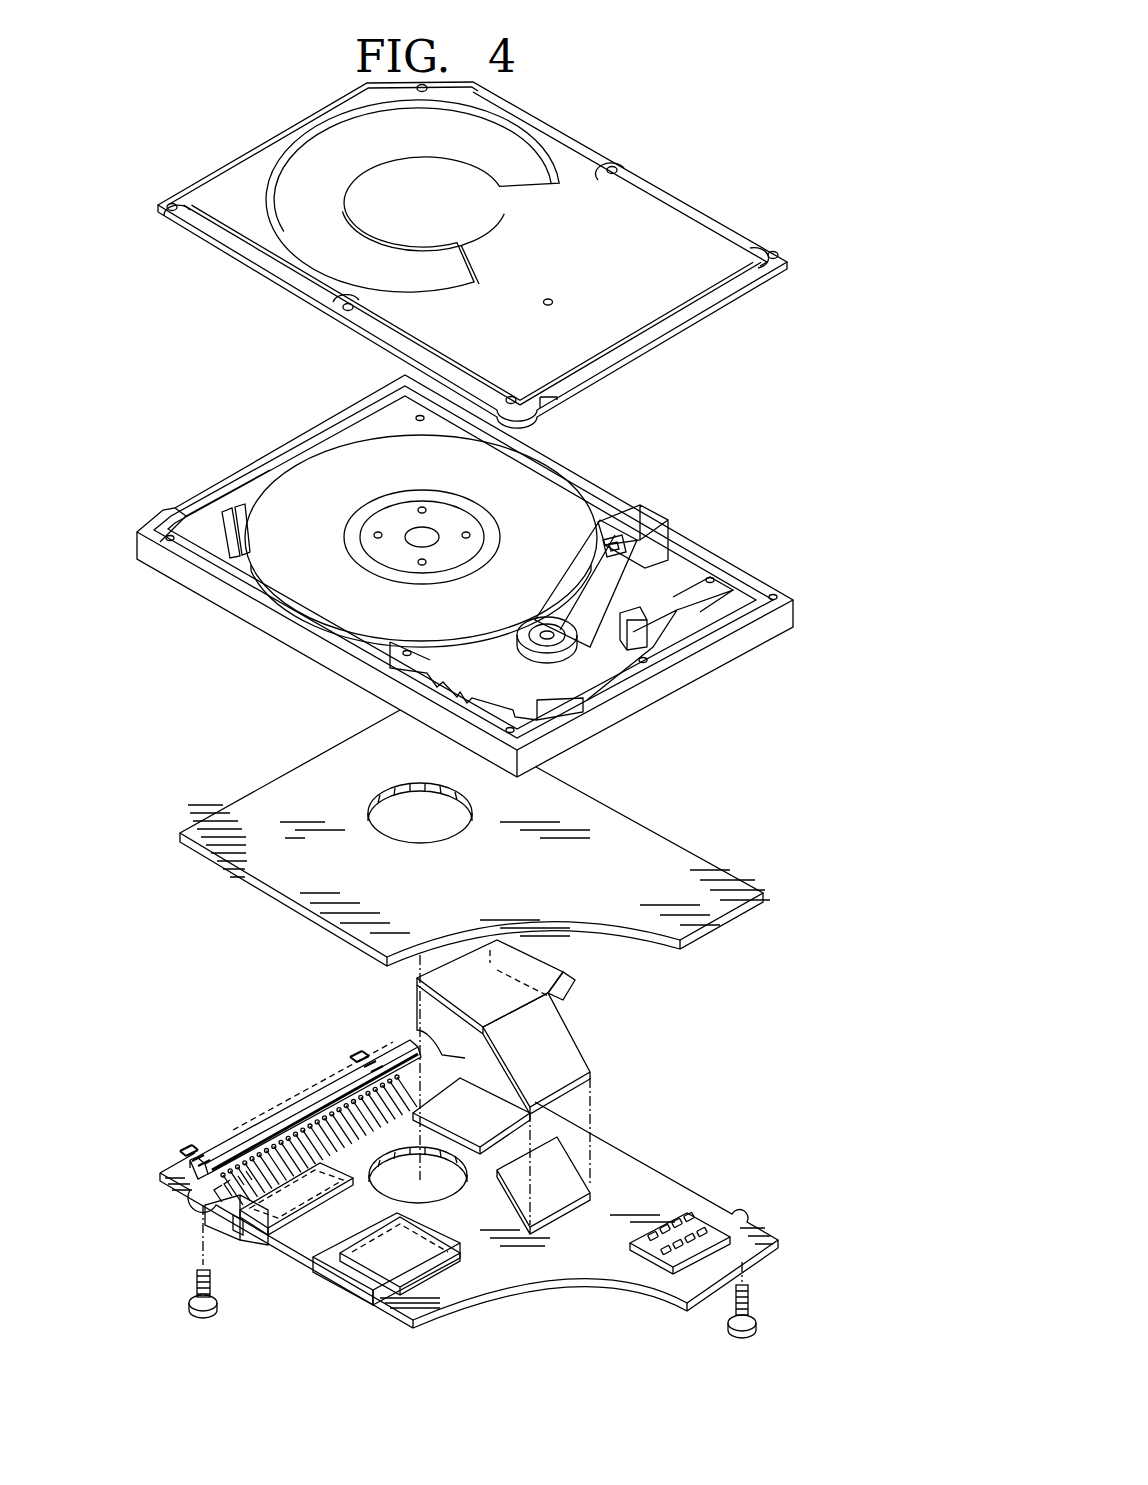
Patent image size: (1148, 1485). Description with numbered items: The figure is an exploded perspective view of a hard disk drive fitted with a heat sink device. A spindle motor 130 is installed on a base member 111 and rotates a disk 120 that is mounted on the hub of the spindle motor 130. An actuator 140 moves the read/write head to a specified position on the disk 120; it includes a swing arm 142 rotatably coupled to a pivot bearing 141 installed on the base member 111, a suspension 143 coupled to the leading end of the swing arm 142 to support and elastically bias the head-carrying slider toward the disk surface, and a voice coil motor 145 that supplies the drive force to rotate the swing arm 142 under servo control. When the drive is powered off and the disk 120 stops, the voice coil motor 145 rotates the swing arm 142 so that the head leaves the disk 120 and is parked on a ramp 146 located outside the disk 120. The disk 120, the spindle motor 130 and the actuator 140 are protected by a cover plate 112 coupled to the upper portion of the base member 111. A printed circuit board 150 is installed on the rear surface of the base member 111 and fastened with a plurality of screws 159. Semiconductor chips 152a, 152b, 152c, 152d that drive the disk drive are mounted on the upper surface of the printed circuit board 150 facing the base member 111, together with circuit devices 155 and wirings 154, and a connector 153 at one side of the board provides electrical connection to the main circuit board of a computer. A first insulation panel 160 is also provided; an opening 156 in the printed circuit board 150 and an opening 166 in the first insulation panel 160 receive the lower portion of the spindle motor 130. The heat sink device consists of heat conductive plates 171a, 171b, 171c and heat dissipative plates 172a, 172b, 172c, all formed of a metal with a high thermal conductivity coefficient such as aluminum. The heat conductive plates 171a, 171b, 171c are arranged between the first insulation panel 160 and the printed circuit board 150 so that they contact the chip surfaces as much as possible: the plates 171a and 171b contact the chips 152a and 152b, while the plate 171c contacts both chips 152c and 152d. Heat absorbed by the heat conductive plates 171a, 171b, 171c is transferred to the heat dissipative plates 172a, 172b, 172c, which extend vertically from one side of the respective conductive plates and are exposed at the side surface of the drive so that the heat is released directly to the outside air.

The base member 111 is at (465, 583).
The cover plate 112 is at (655, 200).
The disk 120 is at (312, 480).
The spindle motor 130 is at (378, 548).
The actuator 140 is at (614, 548).
The pivot bearing 141 is at (540, 630).
The swing arm 142 is at (570, 600).
The suspension 143 is at (603, 548).
The voice coil motor 145 is at (556, 709).
The ramp 146 is at (613, 522).
The printed circuit board 150 is at (445, 1147).
The semiconductor chip 152a is at (287, 1232).
The semiconductor chip 152b is at (433, 1277).
The semiconductor chip 152c is at (457, 1092).
The semiconductor chip 152d is at (565, 1165).
The connector 153 is at (289, 1117).
The wirings 154 is at (283, 1150).
The circuit devices 155 is at (220, 1137).
The opening 156 is at (393, 1150).
The screws 159 is at (195, 1283).
The first insulation panel 160 is at (475, 831).
The opening 166 is at (392, 790).
The heat conductive plate 171a is at (243, 1227).
The heat conductive plate 171b is at (363, 1284).
The heat conductive plate 171c is at (544, 1027).
The heat dissipative plate 172a is at (243, 1220).
The heat dissipative plate 172b is at (350, 1287).
The heat dissipative plate 172c is at (552, 996).